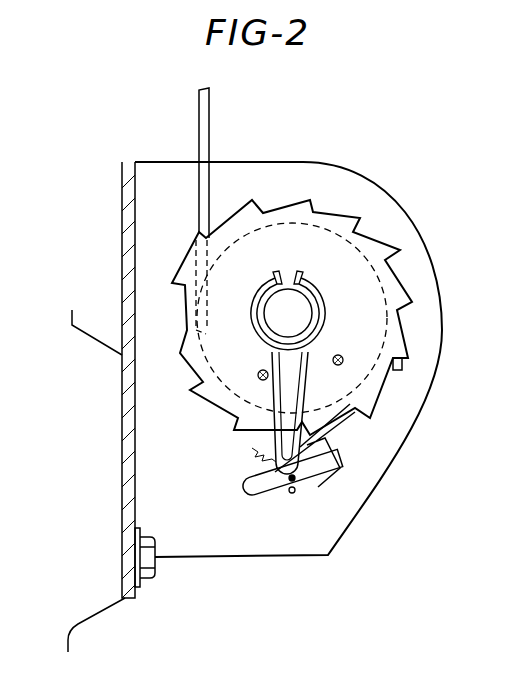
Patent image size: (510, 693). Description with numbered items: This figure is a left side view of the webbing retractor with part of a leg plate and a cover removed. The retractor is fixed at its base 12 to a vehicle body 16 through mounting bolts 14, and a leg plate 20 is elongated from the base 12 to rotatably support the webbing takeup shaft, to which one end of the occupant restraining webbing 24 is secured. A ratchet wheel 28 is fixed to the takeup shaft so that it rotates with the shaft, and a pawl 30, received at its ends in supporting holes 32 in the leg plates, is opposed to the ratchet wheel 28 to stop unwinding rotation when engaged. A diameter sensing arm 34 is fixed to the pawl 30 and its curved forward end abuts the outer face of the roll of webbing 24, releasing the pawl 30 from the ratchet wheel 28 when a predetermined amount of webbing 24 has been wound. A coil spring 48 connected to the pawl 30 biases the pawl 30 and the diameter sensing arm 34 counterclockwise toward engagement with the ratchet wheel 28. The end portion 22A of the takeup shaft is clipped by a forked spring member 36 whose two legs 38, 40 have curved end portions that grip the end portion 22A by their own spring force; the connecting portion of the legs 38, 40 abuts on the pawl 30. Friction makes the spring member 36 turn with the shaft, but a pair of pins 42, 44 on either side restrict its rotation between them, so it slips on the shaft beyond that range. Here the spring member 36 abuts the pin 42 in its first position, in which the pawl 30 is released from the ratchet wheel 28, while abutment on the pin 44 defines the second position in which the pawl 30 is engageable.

The base 12 is at (128, 602).
The mounting bolts 14 is at (157, 566).
The vehicle body 16 is at (110, 346).
The leg plate 20 is at (418, 226).
The end portion of the takeup shaft 22A is at (289, 300).
The occupant restraining webbing 24 is at (211, 118).
The ratchet wheels 28 is at (418, 272).
The pawl 30 is at (340, 456).
The supporting holes 32 is at (293, 492).
The diameter sensing arm 34 is at (403, 366).
The spring member 36 is at (310, 386).
The leg 38 is at (260, 298).
The leg 40 is at (318, 294).
The pin 42 is at (262, 369).
The pin 44 is at (339, 354).
The coil spring 48 is at (310, 486).